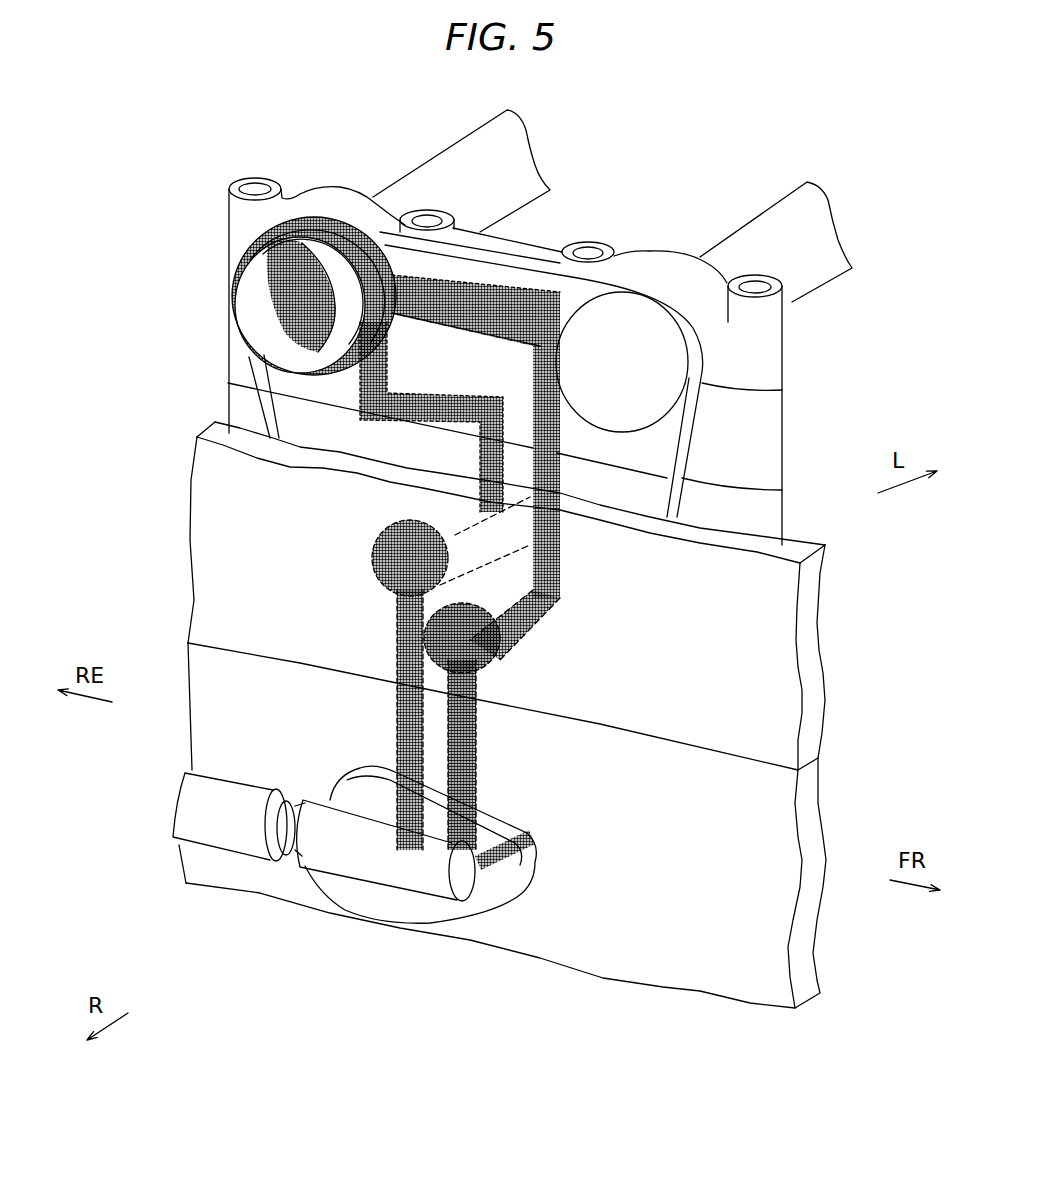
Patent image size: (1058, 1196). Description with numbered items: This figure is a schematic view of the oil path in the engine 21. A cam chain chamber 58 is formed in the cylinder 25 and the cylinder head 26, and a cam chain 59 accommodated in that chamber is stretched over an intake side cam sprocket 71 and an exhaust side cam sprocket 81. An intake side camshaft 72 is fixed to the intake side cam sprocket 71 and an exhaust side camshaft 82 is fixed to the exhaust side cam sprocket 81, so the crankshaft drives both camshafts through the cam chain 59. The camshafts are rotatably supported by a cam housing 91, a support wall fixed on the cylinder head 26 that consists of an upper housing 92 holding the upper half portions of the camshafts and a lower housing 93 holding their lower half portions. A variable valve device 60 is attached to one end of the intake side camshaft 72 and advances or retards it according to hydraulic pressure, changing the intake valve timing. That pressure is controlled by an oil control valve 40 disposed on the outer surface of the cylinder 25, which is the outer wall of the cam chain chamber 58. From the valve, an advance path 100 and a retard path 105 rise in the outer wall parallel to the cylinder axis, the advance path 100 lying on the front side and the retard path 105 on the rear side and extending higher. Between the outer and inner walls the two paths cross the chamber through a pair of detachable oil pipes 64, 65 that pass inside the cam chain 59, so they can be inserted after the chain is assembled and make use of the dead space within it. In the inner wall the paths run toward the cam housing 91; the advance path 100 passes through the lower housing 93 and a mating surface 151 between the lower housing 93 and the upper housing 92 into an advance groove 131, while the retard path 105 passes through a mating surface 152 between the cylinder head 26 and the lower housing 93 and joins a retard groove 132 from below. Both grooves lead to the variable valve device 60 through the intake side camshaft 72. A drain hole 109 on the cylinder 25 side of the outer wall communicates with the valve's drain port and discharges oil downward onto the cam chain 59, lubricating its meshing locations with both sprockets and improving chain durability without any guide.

The engine 21 is at (529, 467).
The intake side camshaft 72 is at (455, 158).
The advance groove 131 is at (352, 214).
The exhaust side camshaft 82 is at (782, 216).
The variable valve device 60 is at (266, 252).
The retard groove 132 is at (268, 310).
The mating surface 151 is at (477, 338).
The upper housing 92 is at (768, 350).
The lower housing 93 is at (770, 394).
The cam housing 91 is at (802, 410).
The intake side cam sprocket 71 is at (325, 372).
The cam chain 59 is at (685, 433).
The cam chain chamber 58 is at (622, 401).
The exhaust side cam sprocket 81 is at (650, 413).
The mating surface 152 is at (350, 410).
The oil pipe 65 is at (422, 510).
The cylinder head 26 is at (203, 548).
The cylinder 25 is at (203, 687).
The retard path 105 is at (393, 720).
The oil pipe 64 is at (540, 628).
The advance path 100 is at (478, 740).
The drain hole 109 is at (535, 838).
The oil control valve 40 is at (404, 875).